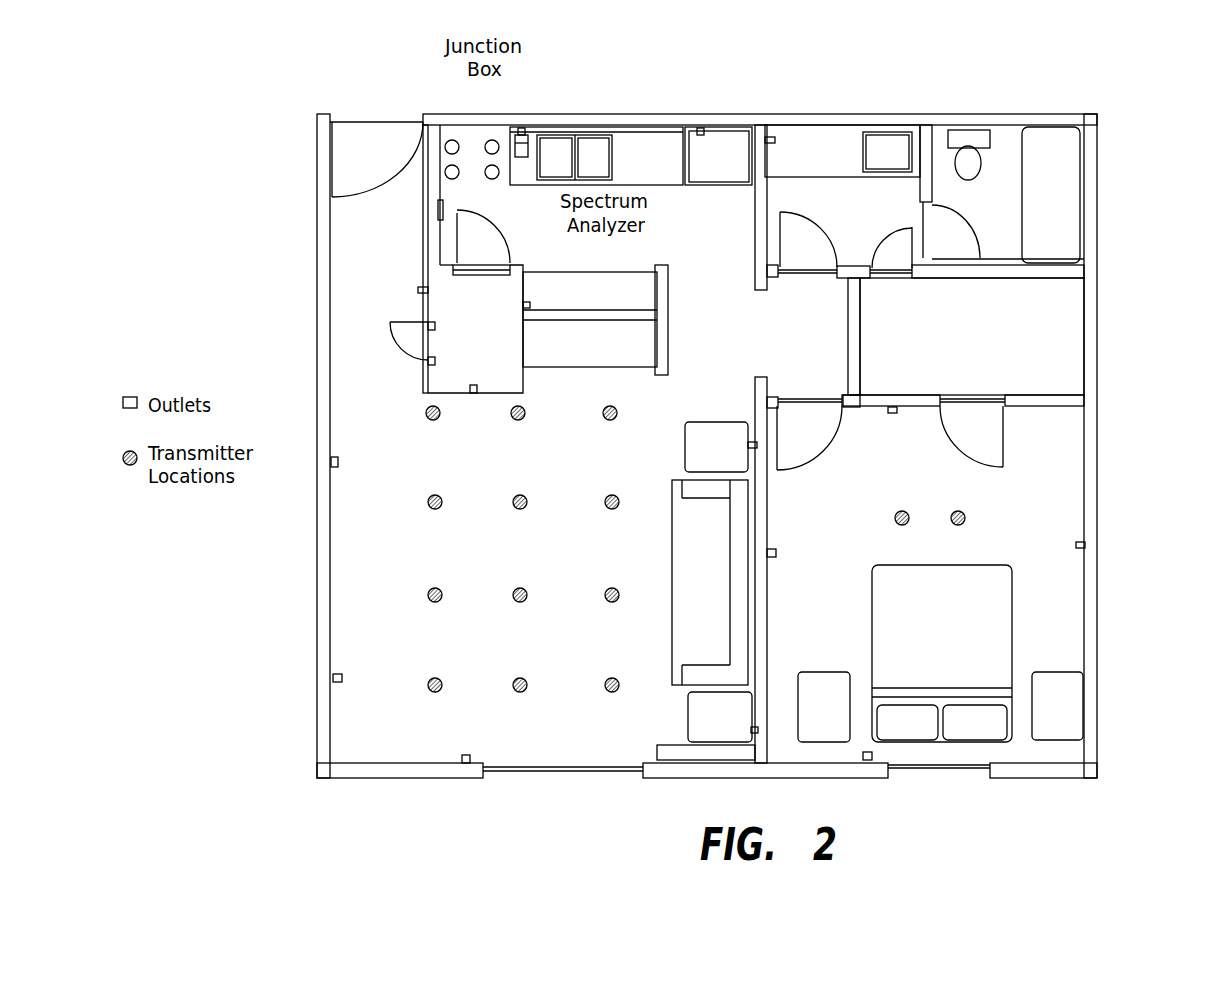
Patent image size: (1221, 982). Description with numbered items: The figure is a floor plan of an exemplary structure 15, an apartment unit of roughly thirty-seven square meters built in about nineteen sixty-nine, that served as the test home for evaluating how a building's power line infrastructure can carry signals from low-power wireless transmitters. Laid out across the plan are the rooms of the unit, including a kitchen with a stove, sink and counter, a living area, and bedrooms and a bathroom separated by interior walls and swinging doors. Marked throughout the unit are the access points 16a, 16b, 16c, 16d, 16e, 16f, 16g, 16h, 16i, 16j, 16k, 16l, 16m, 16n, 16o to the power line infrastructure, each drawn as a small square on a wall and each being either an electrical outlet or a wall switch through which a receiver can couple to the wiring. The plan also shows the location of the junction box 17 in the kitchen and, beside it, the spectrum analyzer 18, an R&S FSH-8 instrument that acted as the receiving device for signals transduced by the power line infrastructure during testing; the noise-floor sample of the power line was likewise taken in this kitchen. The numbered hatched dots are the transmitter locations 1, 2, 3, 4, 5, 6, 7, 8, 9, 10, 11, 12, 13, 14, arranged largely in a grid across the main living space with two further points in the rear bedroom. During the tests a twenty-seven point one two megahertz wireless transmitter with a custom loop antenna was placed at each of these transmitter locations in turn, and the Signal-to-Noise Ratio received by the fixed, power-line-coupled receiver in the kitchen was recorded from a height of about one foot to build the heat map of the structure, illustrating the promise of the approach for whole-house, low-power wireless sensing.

The structure 15 is at (1105, 111).
The access point 16a is at (420, 288).
The access point 16b is at (340, 460).
The access point 16c is at (342, 677).
The access point 16d is at (468, 755).
The access point 16e is at (473, 385).
The access point 16f is at (530, 303).
The access point 16g is at (527, 128).
The access point 16h is at (703, 134).
The access point 16i is at (775, 140).
The access point 16j is at (892, 413).
The access point 16k is at (752, 442).
The access point 16l is at (777, 552).
The access point 16m is at (760, 730).
The access point 16n is at (872, 756).
The access point 16o is at (1075, 543).
The junction box 17 is at (457, 190).
The spectrum analyzer 18 is at (523, 160).
The transmitter location 1 is at (427, 685).
The transmitter location 2 is at (512, 685).
The transmitter location 3 is at (605, 685).
The transmitter location 4 is at (427, 595).
The transmitter location 5 is at (512, 595).
The transmitter location 6 is at (605, 595).
The transmitter location 7 is at (427, 502).
The transmitter location 8 is at (512, 502).
The transmitter location 9 is at (605, 502).
The transmitter location 10 is at (421, 413).
The transmitter location 11 is at (506, 413).
The transmitter location 12 is at (598, 413).
The transmitter location 13 is at (889, 519).
The transmitter location 14 is at (945, 519).